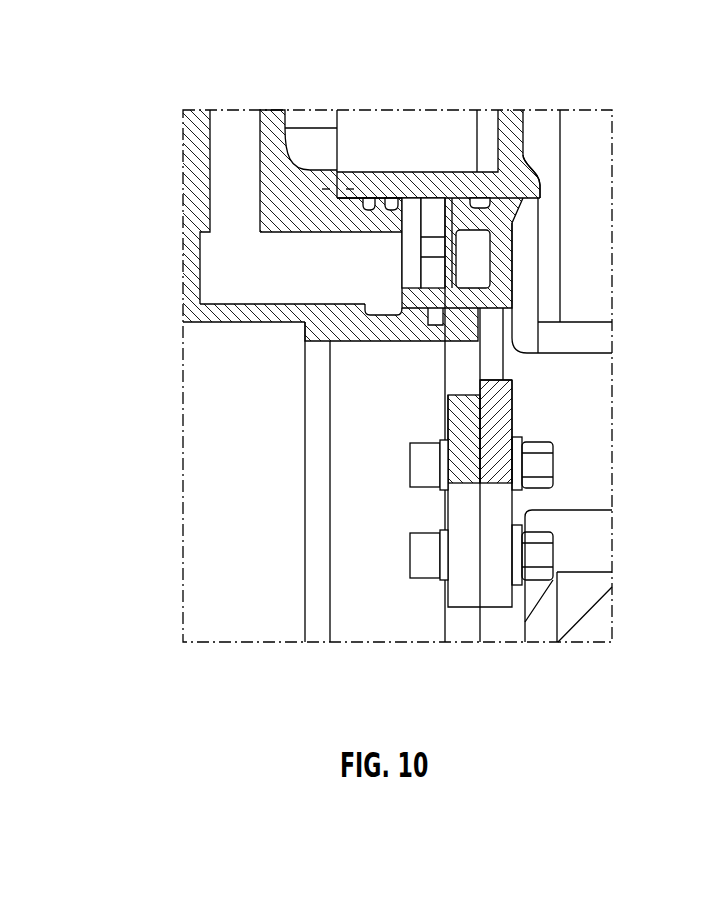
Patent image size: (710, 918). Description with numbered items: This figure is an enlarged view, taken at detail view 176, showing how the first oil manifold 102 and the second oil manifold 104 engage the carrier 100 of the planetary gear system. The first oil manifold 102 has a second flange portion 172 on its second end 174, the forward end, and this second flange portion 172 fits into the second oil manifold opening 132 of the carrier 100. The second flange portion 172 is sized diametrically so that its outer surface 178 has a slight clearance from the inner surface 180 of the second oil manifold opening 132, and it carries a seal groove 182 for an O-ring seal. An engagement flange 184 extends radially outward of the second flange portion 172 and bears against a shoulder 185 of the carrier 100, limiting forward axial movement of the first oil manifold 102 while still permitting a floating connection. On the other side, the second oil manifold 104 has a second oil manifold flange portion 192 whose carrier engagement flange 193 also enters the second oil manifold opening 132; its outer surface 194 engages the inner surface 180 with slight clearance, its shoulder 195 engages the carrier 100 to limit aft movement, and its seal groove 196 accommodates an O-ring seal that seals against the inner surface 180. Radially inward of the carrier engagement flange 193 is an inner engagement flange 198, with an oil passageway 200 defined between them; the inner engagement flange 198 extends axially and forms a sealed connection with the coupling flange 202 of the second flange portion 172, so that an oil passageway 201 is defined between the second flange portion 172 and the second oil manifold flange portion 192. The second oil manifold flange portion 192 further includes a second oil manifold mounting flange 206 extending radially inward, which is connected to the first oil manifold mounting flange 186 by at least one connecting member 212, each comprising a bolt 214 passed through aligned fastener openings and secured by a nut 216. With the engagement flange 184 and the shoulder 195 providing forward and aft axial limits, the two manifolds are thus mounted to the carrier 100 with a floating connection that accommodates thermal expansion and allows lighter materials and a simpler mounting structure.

The carrier 100 is at (411, 143).
The first oil manifold 102 is at (597, 343).
The second oil manifold 104 is at (203, 598).
The second oil manifold opening 132 is at (447, 356).
The second flange portion 172 is at (513, 265).
The second end 174 is at (543, 240).
The detail view 176 is at (227, 55).
The outer surface 178 is at (499, 188).
The inner surface 180 is at (443, 205).
The seal groove 182 is at (478, 195).
The engagement flange 184 is at (541, 199).
The shoulder 185 is at (539, 188).
The first oil manifold mounting flange 186 is at (498, 540).
The second oil manifold flange portion 192 is at (327, 207).
The carrier engagement flange 193 is at (350, 188).
The outer surface 194 is at (364, 205).
The shoulder 195 is at (325, 189).
The seal groove 196 is at (391, 210).
The inner engagement flange 198 is at (402, 330).
The oil passageway 200 is at (222, 292).
The oil passageway 201 is at (362, 297).
The coupling flange 202 is at (447, 303).
The second oil manifold mounting flange 206 is at (457, 452).
The connecting member 212 is at (412, 463).
The bolt 214 is at (428, 562).
The nut 216 is at (538, 547).